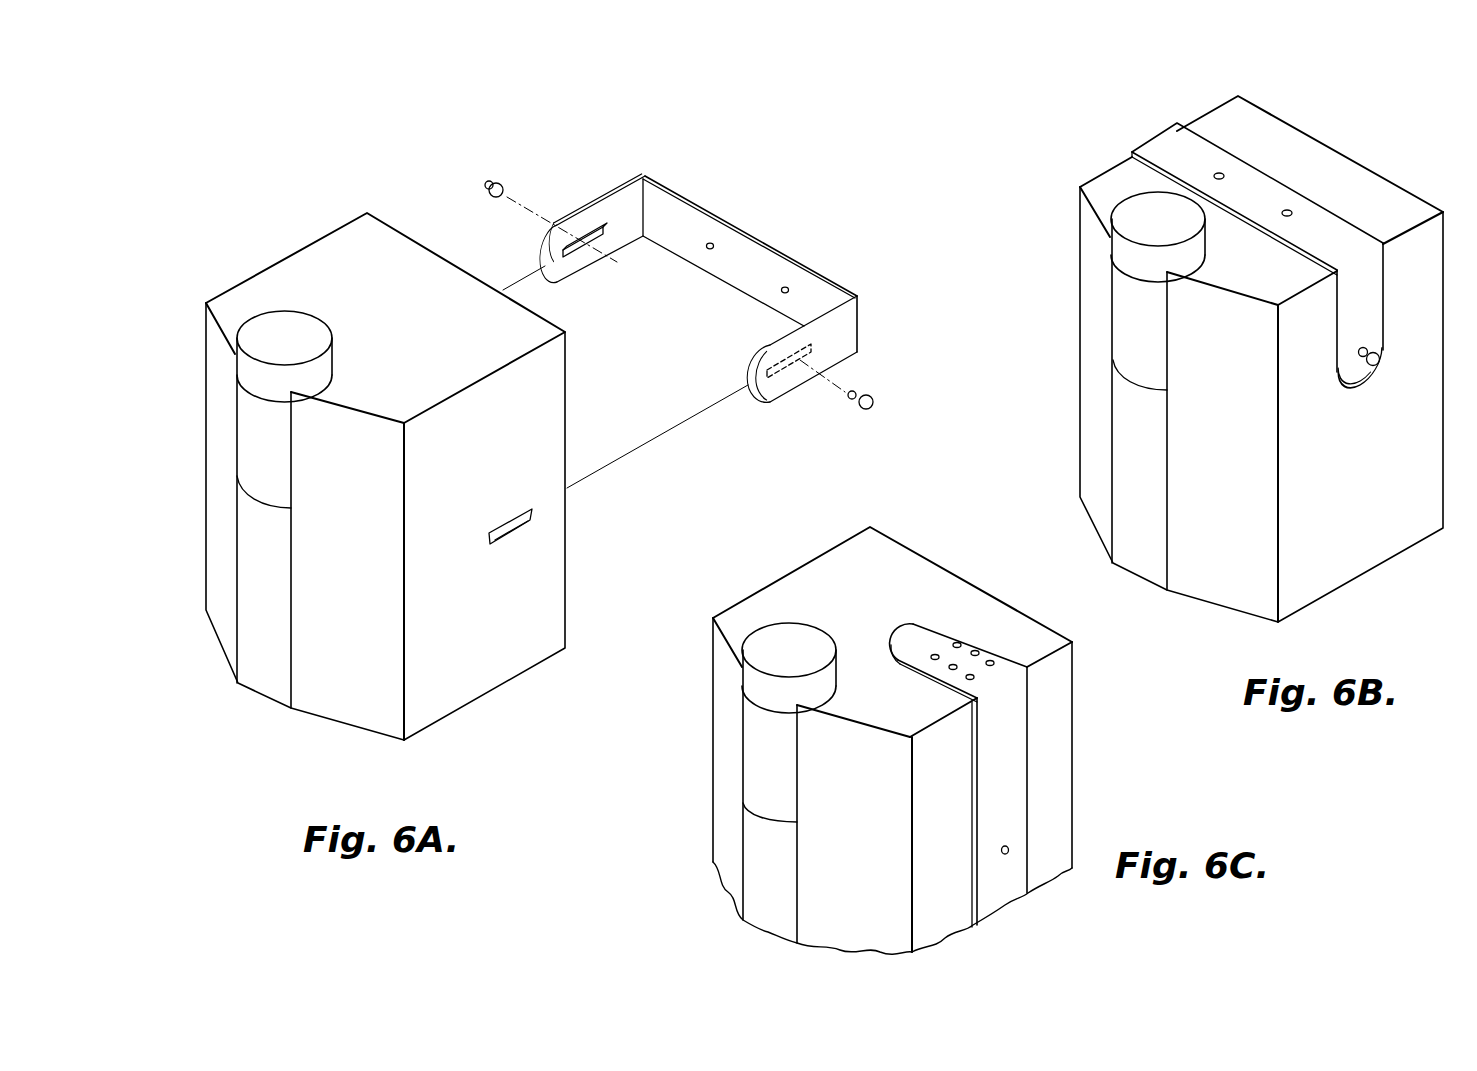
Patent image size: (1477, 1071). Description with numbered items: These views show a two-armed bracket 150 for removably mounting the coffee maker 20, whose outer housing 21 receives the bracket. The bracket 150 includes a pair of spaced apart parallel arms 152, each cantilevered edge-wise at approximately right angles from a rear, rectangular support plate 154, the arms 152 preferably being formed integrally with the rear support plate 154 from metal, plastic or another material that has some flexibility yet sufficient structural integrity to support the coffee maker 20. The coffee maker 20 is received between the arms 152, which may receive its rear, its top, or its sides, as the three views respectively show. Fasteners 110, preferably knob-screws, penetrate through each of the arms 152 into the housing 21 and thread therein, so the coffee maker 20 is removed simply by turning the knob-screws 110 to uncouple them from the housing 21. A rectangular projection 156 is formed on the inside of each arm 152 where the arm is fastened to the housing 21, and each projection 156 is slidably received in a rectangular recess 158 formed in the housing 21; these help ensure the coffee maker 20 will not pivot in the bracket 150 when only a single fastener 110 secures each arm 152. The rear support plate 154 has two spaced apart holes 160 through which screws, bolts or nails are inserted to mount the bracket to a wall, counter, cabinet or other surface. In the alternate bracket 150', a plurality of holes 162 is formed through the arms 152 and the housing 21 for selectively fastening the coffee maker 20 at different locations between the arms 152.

In FIG. 6A, the coffee maker 20 is at (291, 242).
In FIG. 6C, the coffee maker 20 is at (704, 818).
In FIG. 6A, the housing 21 is at (492, 676).
In FIG. 6C, the housing 21 is at (1066, 817).
In FIG. 6A, the fasteners 110 is at (495, 181).
In FIG. 6A, the two-armed bracket 150 is at (701, 286).
In FIG. 6B, the two-armed bracket 150 is at (1242, 250).
In FIG. 6C, the two-armed bracket 150' is at (1028, 724).
In FIG. 6A, the arms 152 is at (614, 188).
In FIG. 6B, the arms 152 is at (1335, 217).
In FIG. 6C, the arms 152 is at (970, 630).
In FIG. 6A, the rear support plate 154 is at (771, 243).
In FIG. 6A, the rectangular projection 156 is at (580, 255).
In FIG. 6A, the rectangular recess 158 is at (518, 526).
In FIG. 6A, the holes 160 is at (782, 291).
In FIG. 6C, the holes 162 is at (953, 664).